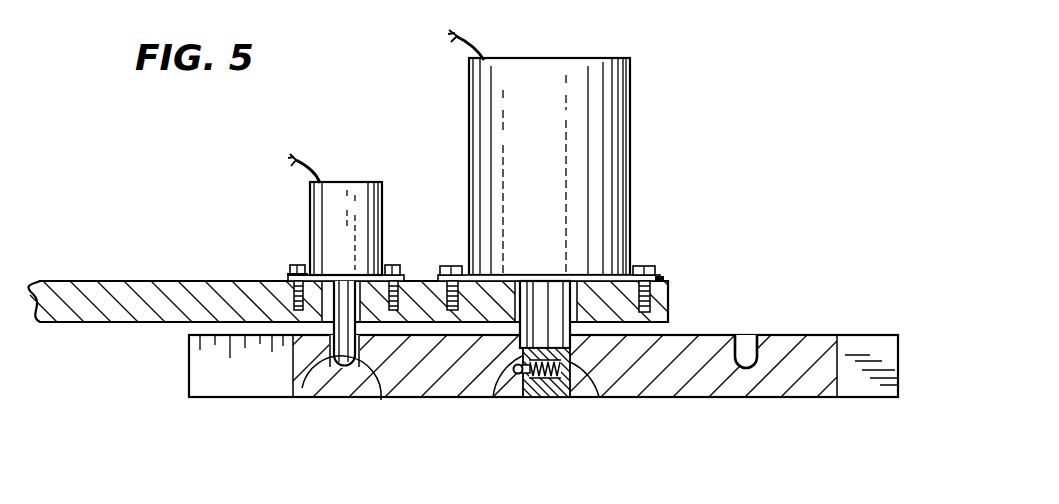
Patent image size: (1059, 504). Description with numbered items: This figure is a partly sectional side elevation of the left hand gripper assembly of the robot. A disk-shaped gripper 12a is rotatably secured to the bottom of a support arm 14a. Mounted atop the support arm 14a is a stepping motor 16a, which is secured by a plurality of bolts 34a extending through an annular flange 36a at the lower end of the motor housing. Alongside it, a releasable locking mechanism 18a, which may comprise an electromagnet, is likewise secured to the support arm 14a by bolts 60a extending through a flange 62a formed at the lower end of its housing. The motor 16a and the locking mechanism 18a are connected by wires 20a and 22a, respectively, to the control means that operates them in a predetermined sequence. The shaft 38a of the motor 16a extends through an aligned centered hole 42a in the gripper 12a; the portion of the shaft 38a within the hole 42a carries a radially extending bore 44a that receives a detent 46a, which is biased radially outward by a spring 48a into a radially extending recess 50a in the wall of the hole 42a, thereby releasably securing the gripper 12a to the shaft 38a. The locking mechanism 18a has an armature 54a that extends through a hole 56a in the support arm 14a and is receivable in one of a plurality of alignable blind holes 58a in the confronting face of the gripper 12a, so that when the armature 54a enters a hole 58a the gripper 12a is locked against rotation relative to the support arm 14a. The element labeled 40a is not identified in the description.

The gripper 12a is at (718, 390).
The support arm 14a is at (157, 281).
The stepping motor 16a is at (612, 103).
The locking mechanism 18a is at (320, 223).
The wire 20a is at (479, 46).
The wire 22a is at (313, 167).
The bolt 34a is at (447, 269).
The annular flange 36a is at (663, 280).
The shaft 38a is at (546, 292).
The flange 40a is at (476, 276).
The hole 42a is at (575, 385).
The bore 44a is at (550, 397).
The detent 46a is at (519, 378).
The spring 48a is at (513, 370).
The recess 50a is at (508, 378).
The armature 54a is at (328, 366).
The hole 56a is at (318, 336).
The blind hole 58a is at (748, 344).
The bolt 60a is at (297, 266).
The flange 62a is at (292, 270).